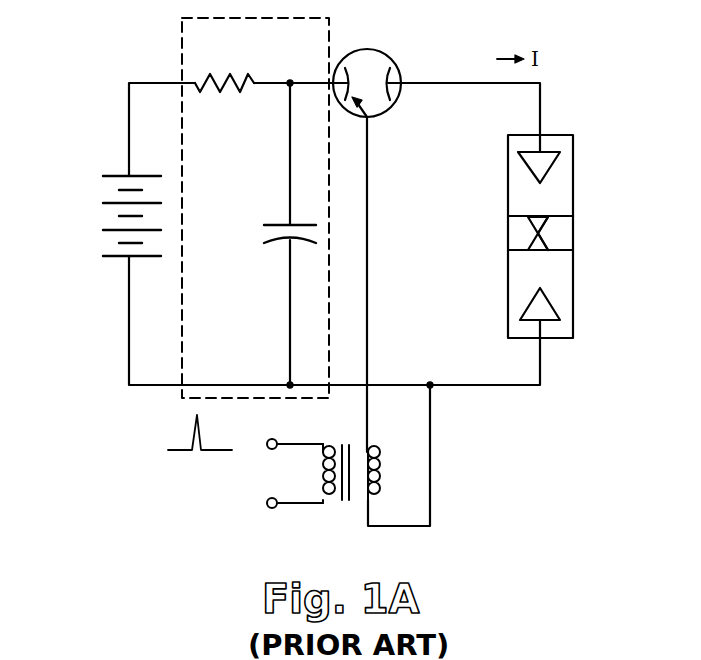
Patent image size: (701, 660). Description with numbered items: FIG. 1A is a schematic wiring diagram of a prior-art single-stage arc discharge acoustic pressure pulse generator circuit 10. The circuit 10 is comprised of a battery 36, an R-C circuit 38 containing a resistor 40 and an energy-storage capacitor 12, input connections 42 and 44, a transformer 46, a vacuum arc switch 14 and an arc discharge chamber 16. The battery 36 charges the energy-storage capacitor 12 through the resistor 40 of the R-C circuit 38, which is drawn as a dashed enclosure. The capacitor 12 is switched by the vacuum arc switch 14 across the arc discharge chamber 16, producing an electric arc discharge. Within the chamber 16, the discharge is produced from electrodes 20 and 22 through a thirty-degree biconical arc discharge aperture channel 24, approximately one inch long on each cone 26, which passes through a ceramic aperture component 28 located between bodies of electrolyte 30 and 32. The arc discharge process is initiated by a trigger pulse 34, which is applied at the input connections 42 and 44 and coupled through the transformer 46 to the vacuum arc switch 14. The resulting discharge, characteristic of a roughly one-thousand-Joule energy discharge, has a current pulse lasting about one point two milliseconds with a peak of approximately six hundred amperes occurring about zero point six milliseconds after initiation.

The arc discharge acoustic pressure pulse generator circuit 10 is at (108, 350).
The energy-storage capacitor 12 is at (278, 224).
The vacuum arc switch 14 is at (385, 53).
The arc discharge chamber 16 is at (566, 236).
The electrode 20 is at (548, 152).
The electrode 22 is at (522, 310).
The biconical arc discharge aperture channel 24 is at (548, 219).
The cone 26 is at (548, 241).
The ceramic aperture component 28 is at (522, 242).
The body of electrolyte 30 is at (530, 201).
The body of electrolyte 32 is at (530, 274).
The trigger pulse 34 is at (200, 435).
The battery 36 is at (116, 176).
The R-C circuit 38 is at (182, 50).
The resistor 40 is at (236, 77).
The input connection 42 is at (268, 450).
The input connection 44 is at (268, 510).
The transformer 46 is at (342, 503).